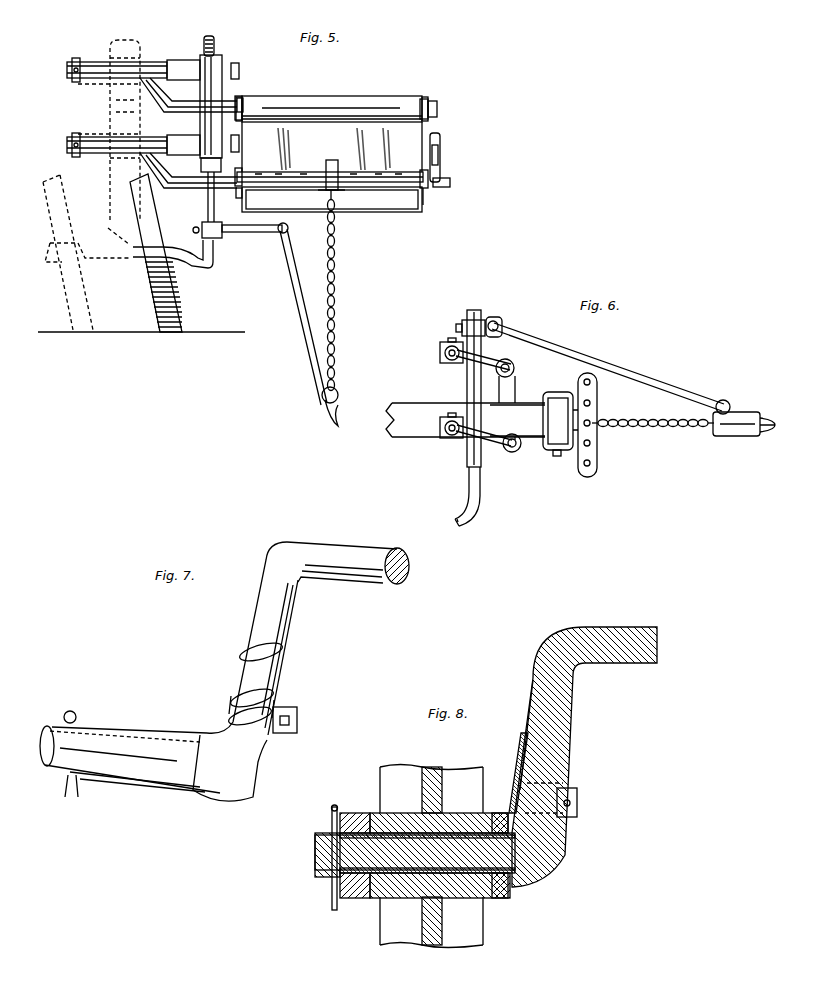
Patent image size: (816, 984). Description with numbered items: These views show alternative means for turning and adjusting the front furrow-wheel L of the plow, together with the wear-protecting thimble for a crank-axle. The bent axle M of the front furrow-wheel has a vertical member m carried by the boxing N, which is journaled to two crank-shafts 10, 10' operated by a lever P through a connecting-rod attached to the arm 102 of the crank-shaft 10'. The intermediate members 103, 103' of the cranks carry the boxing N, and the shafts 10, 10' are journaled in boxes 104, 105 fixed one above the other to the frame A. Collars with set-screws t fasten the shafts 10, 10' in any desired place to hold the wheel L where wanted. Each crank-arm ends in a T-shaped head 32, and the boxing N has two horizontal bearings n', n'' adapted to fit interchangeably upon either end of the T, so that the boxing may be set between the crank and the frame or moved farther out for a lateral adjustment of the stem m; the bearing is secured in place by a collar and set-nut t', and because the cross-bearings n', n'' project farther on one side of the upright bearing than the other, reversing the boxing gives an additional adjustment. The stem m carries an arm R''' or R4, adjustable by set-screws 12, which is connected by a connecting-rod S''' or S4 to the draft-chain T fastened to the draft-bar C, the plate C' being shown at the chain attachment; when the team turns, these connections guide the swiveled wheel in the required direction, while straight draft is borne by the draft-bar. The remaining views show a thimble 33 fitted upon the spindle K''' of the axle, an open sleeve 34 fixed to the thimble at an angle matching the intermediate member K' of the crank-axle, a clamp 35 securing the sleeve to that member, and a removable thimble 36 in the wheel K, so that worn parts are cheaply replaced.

In FIG. 5, the T-shaped head 32 is at (156, 62).
In FIG. 6, the T-shaped head 32 is at (452, 363).
In FIG. 5, the vertical member m is at (214, 38).
In FIG. 6, the vertical member m is at (480, 472).
In FIG. 5, the horizontal bearing n' is at (209, 58).
In FIG. 6, the horizontal bearing n' is at (459, 353).
In FIG. 5, the horizontal bearing n'' is at (133, 145).
In FIG. 6, the horizontal bearing n'' is at (460, 410).
In FIG. 5, the collar and set-nut t' is at (154, 101).
In FIG. 5, the collars with set-screws t is at (334, 148).
In FIG. 6, the collars with set-screws t is at (517, 419).
In FIG. 5, the intermediate member of crank 103 is at (157, 142).
In FIG. 6, the intermediate member of crank 103 is at (558, 417).
In FIG. 6, the intermediate member of crank 103' is at (516, 420).
In FIG. 5, the crank-shaft 10 is at (318, 96).
In FIG. 6, the crank-shaft 10 is at (504, 368).
In FIG. 5, the crank-shaft 10' is at (352, 189).
In FIG. 6, the crank-shaft 10' is at (524, 424).
In FIG. 5, the boxing N is at (205, 120).
In FIG. 6, the boxing N is at (466, 383).
In FIG. 5, the set-screws 12 is at (201, 230).
In FIG. 6, the set-screws 12 is at (460, 328).
In FIG. 5, the bent axle M is at (224, 263).
In FIG. 6, the bent axle M is at (446, 502).
In FIG. 5, the arm R''' is at (255, 246).
In FIG. 6, the arm R4 is at (499, 320).
In FIG. 5, the front furrow-wheel L is at (177, 300).
In FIG. 5, the connecting-rod S''' is at (312, 336).
In FIG. 6, the connecting-rod S''' is at (744, 428).
In FIG. 6, the connecting-rod S4 is at (652, 380).
In FIG. 5, the draft-chain T is at (338, 248).
In FIG. 6, the draft-chain T is at (646, 430).
In FIG. 5, the frame A is at (383, 401).
In FIG. 5, the box 104 is at (352, 100).
In FIG. 5, the lever P is at (440, 136).
In FIG. 5, the arm of crank-shaft 102 is at (440, 152).
In FIG. 5, the draft-bar C is at (330, 166).
In FIG. 6, the perforated plate C' is at (595, 426).
In FIG. 5, the box 105 is at (389, 192).
In FIG. 7, the wheel K is at (348, 548).
In FIG. 8, the wheel K is at (498, 777).
In FIG. 7, the bent arm K' is at (256, 671).
In FIG. 8, the bent arm K' is at (562, 735).
In FIG. 8, the nut K''' is at (392, 855).
In FIG. 7, the open sleeve 34 is at (245, 660).
In FIG. 8, the open sleeve 34 is at (523, 747).
In FIG. 7, the thimble 33 is at (52, 737).
In FIG. 8, the thimble 33 is at (315, 880).
In FIG. 7, the clamp 35 is at (290, 707).
In FIG. 8, the clamp 35 is at (570, 790).
In FIG. 8, the removable thimble 36 is at (497, 895).